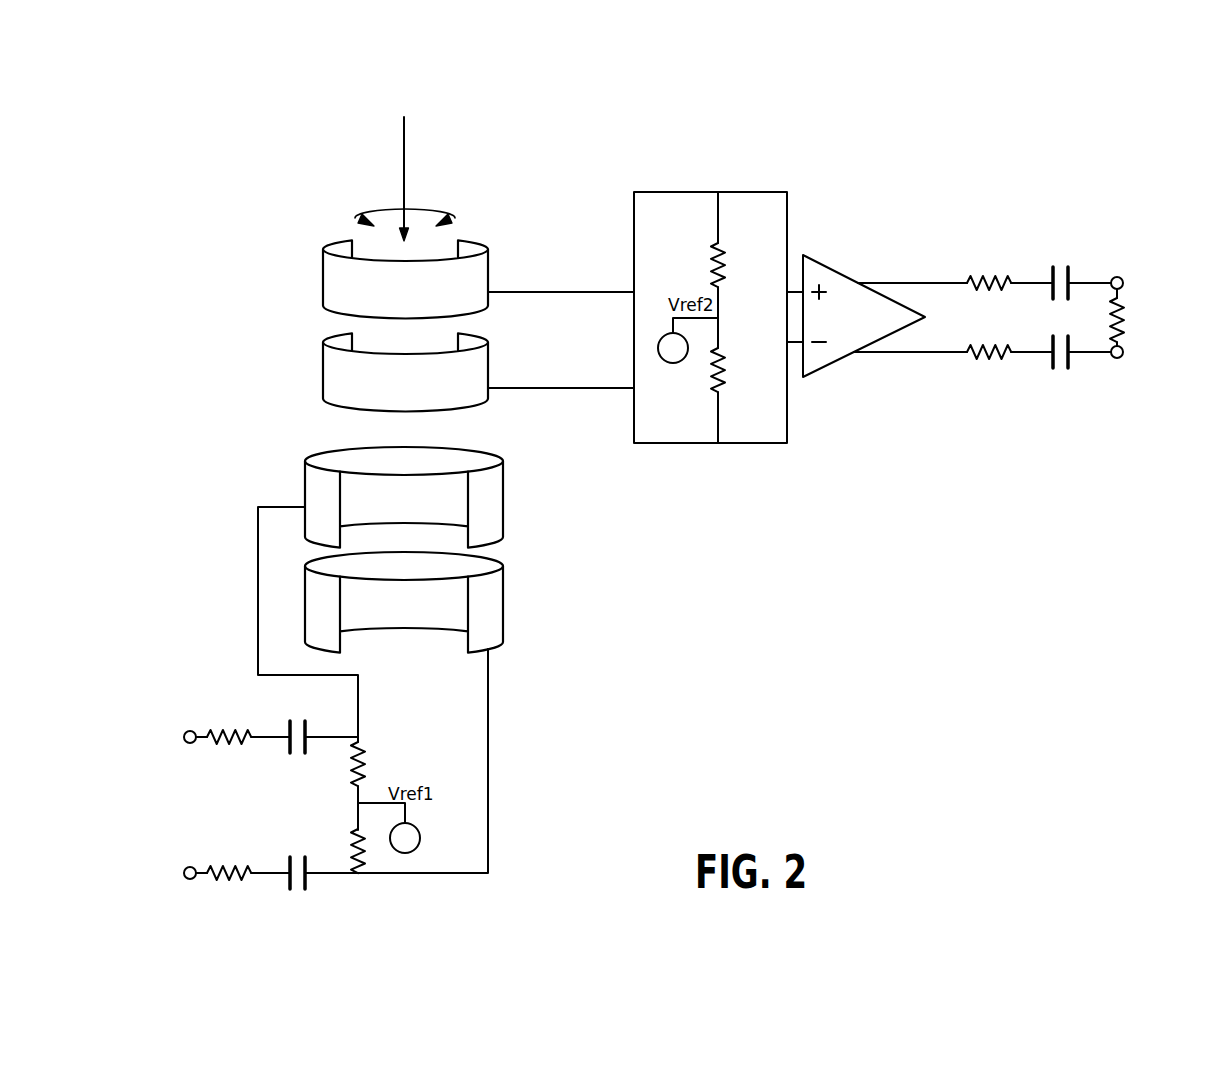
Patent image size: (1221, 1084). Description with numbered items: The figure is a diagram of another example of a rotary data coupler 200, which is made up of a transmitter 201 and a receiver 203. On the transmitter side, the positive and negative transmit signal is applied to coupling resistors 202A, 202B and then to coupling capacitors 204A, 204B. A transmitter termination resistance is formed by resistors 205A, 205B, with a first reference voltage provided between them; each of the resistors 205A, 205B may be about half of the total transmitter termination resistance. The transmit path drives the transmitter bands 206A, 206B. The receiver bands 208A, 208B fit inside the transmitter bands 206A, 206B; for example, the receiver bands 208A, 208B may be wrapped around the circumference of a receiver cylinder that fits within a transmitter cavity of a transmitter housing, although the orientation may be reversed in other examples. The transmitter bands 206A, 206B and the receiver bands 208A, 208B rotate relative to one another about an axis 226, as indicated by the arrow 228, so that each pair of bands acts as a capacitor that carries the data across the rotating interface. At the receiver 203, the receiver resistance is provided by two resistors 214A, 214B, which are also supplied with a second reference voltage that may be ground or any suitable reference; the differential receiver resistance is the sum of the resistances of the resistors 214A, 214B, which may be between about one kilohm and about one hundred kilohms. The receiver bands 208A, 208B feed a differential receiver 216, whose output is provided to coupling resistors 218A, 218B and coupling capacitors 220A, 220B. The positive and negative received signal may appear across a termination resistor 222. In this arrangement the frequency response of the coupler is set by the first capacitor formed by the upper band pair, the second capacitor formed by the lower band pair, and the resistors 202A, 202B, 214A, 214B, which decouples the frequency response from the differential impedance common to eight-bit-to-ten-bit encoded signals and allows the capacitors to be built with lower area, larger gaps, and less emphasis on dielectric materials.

The rotary data coupler 200 is at (835, 141).
The transmitter 201 is at (560, 699).
The receiver 203 is at (560, 156).
The coupling resistor 202A is at (208, 745).
The coupling resistor 202B is at (208, 863).
The coupling capacitor 204A is at (288, 722).
The coupling capacitor 204B is at (288, 860).
The termination resistor 205A is at (365, 768).
The termination resistor 205B is at (356, 833).
The transmitter band 206A is at (505, 489).
The transmitter band 206B is at (505, 598).
The receiver band 208A is at (322, 260).
The receiver band 208B is at (322, 366).
The receiver resistor 214A is at (718, 243).
The receiver resistor 214B is at (718, 392).
The differential receiver 216 is at (862, 254).
The coupling resistor 218A is at (972, 292).
The coupling resistor 218B is at (975, 362).
The coupling capacitor 220A is at (1052, 266).
The coupling capacitor 220B is at (1070, 370).
The termination resistor 222 is at (1122, 298).
The axis 226 is at (404, 160).
The arrow 228 is at (453, 216).